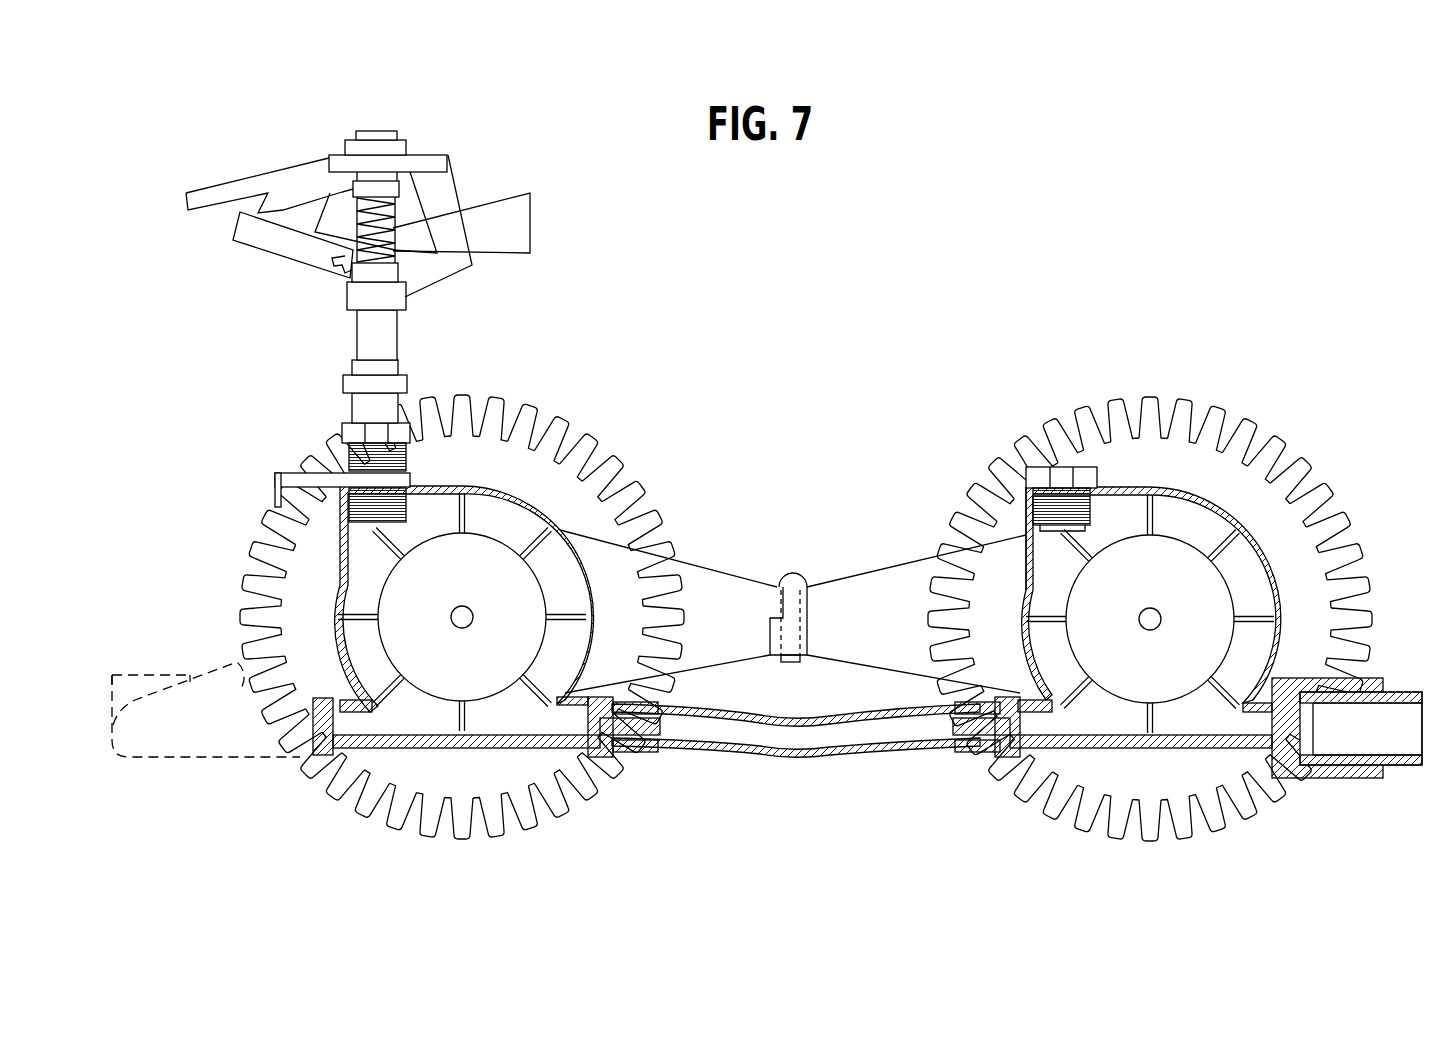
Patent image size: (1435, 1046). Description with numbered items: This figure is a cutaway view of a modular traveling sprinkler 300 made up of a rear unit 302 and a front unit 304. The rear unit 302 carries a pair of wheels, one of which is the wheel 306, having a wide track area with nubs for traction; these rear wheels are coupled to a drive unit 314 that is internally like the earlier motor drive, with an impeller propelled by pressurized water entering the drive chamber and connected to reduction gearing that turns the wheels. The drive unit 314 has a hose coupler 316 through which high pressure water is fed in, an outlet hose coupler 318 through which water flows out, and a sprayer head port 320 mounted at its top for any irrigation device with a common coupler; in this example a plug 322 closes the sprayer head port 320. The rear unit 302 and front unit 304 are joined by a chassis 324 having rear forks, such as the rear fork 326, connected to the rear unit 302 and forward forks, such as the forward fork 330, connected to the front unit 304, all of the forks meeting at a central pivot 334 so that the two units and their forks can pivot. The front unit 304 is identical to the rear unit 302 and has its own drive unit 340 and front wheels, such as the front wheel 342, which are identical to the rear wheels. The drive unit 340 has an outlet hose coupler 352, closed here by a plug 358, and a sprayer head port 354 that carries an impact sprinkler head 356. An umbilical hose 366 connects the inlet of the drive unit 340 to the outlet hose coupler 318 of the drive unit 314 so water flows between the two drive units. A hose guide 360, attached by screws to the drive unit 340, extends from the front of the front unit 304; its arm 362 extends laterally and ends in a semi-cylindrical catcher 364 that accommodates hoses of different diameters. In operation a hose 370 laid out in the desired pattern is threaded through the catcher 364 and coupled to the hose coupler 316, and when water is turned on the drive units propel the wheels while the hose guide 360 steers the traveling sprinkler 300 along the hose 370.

The traveling sprinkler 300 is at (793, 601).
The rear unit 302 is at (1150, 608).
The front unit 304 is at (462, 576).
The wheel 306 is at (1275, 795).
The drive unit 314 is at (1265, 545).
The hose coupler 316 is at (1373, 680).
The outlet hose coupler 318 is at (957, 750).
The sprayer head port 320 is at (1022, 505).
The plug 322 is at (1065, 478).
The chassis 324 is at (880, 496).
The rear fork 326 is at (890, 577).
The forward fork 330 is at (690, 577).
The central pivot 334 is at (783, 572).
The drive unit 340 is at (340, 657).
The front wheel 342 is at (588, 443).
The outlet hose coupler 352 is at (347, 752).
The sprayer head port 354 is at (403, 423).
The impact sprinkler head 356 is at (397, 326).
The plug 358 is at (338, 752).
The hose guide 360 is at (197, 758).
The arm 362 is at (237, 662).
The catcher 364 is at (138, 670).
The umbilical hose 366 is at (863, 756).
The hose 370 is at (1405, 766).